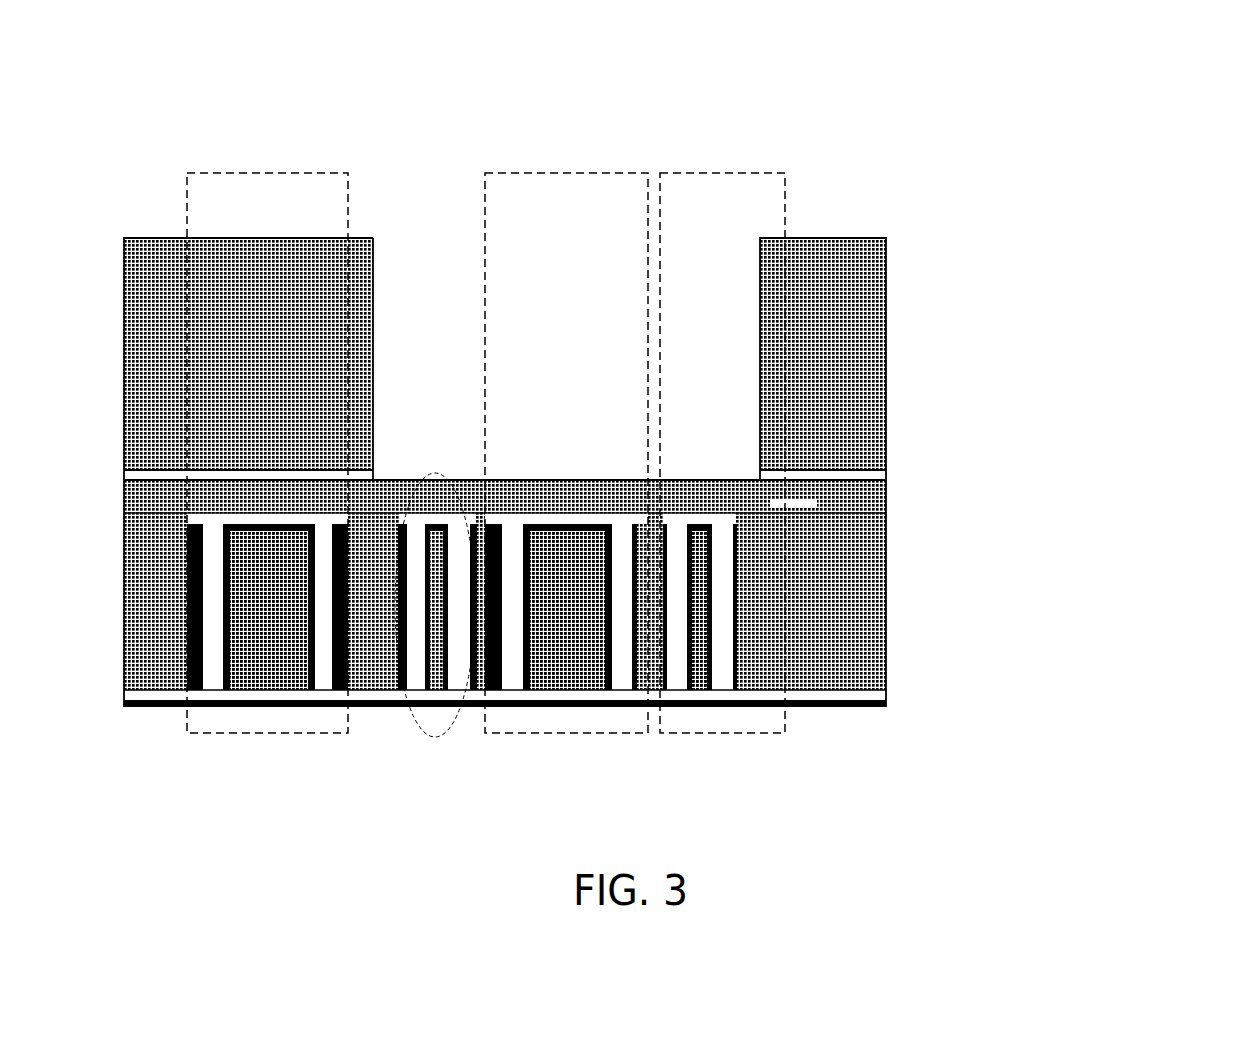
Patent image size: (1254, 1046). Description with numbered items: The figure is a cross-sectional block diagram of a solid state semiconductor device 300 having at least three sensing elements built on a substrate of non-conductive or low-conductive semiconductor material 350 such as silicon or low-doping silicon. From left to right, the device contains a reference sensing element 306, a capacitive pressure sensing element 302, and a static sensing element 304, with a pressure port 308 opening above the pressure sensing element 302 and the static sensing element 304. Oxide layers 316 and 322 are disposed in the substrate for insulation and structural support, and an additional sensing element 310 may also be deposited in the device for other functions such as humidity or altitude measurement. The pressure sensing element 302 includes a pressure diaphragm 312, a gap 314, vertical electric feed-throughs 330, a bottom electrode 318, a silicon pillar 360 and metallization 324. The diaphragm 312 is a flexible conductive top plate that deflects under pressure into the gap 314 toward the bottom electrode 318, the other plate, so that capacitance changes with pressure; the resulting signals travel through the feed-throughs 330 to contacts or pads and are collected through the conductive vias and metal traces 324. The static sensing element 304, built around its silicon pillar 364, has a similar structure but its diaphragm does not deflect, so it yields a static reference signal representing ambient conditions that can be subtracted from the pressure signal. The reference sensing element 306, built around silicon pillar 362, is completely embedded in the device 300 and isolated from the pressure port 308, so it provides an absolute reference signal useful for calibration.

The solid state semiconductor device 300 is at (1187, 125).
The capacitive pressure sensing element 302 is at (542, 173).
The static sensing element 304 is at (665, 173).
The reference sensing element 306 is at (245, 173).
The pressure port 308 is at (447, 392).
The additional sensing element 310 is at (438, 743).
The pressure diaphragm 312 is at (571, 493).
The gap 314 is at (608, 513).
The oxide layer 316 is at (820, 471).
The bottom electrode 318 is at (582, 534).
The oxide layer 322 is at (819, 690).
The metallization 324 is at (698, 713).
The vertical electric feed-through 330 is at (530, 662).
The semiconductor material 350 is at (178, 356).
The silicon pillar 360 is at (574, 622).
The silicon pillar 362 is at (291, 616).
The silicon pillar 364 is at (703, 610).